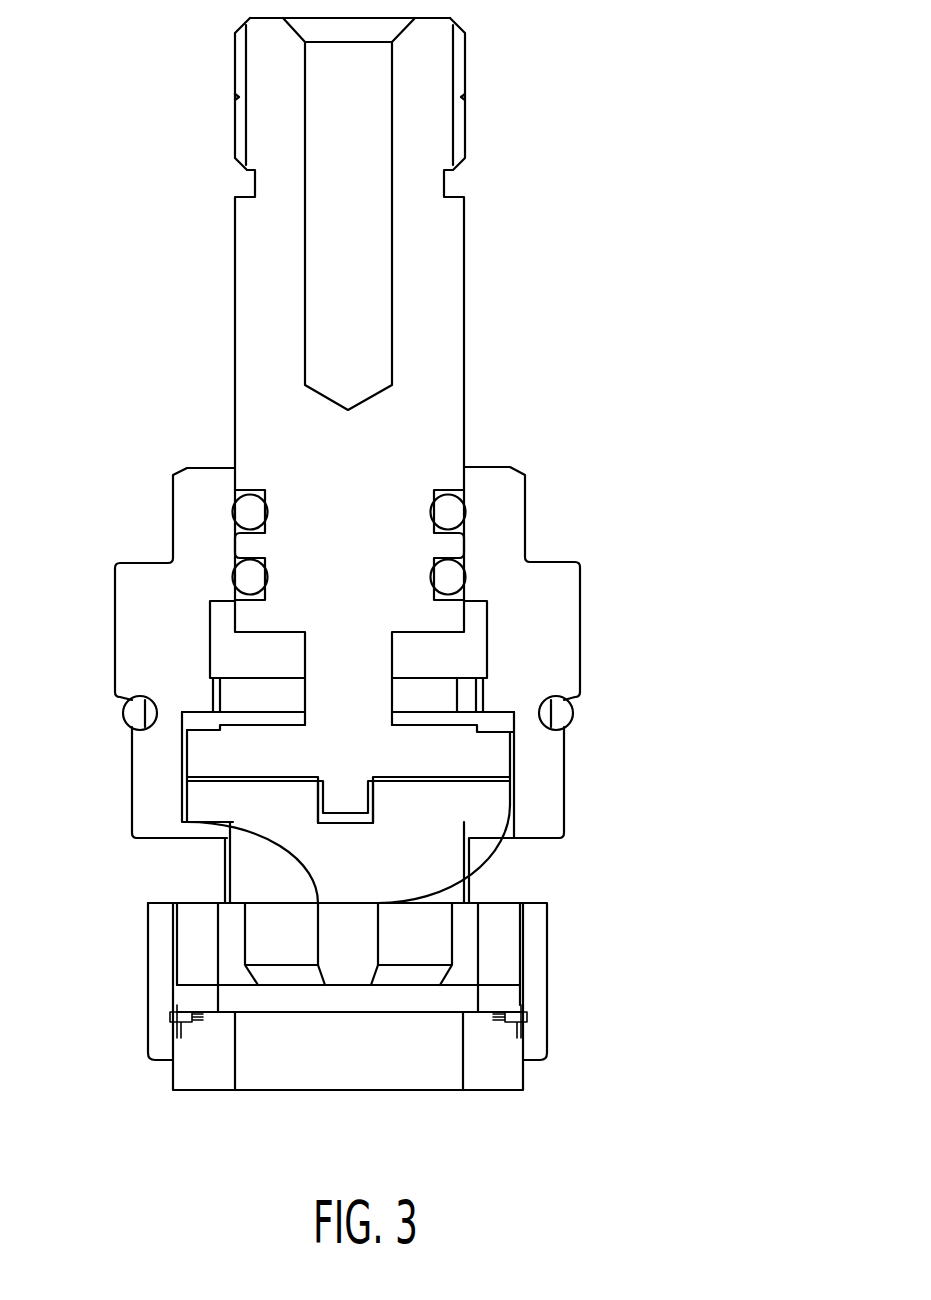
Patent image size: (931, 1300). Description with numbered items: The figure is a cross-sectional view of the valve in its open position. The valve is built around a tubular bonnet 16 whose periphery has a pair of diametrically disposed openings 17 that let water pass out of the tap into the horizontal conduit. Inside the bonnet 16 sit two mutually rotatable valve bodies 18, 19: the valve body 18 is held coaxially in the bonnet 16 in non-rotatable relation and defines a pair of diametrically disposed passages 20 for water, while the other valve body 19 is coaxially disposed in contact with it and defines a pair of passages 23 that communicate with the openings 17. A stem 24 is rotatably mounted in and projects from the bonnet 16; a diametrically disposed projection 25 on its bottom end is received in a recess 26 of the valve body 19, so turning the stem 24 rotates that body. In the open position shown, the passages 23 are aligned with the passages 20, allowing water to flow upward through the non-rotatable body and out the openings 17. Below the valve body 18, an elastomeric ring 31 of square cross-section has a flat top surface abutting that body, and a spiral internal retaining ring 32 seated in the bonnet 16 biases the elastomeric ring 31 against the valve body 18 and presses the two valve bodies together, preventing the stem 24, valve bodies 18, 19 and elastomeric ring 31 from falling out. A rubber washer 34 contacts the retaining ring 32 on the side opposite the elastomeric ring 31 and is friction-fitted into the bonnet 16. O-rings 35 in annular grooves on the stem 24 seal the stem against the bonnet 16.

The bonnet 16 is at (560, 593).
The openings 17 is at (543, 840).
The valve body 18 is at (193, 955).
The valve body 19 is at (202, 797).
The passages 20 is at (280, 952).
The passages 23 is at (432, 872).
The stem 24 is at (262, 274).
The diametrically disposed projection 25 is at (257, 877).
The recess 26 is at (322, 806).
The elastomeric ring 31 is at (493, 1002).
The spiral internal retaining ring 32 is at (527, 1017).
The washer 34 is at (493, 1075).
The O-rings 35 is at (457, 575).